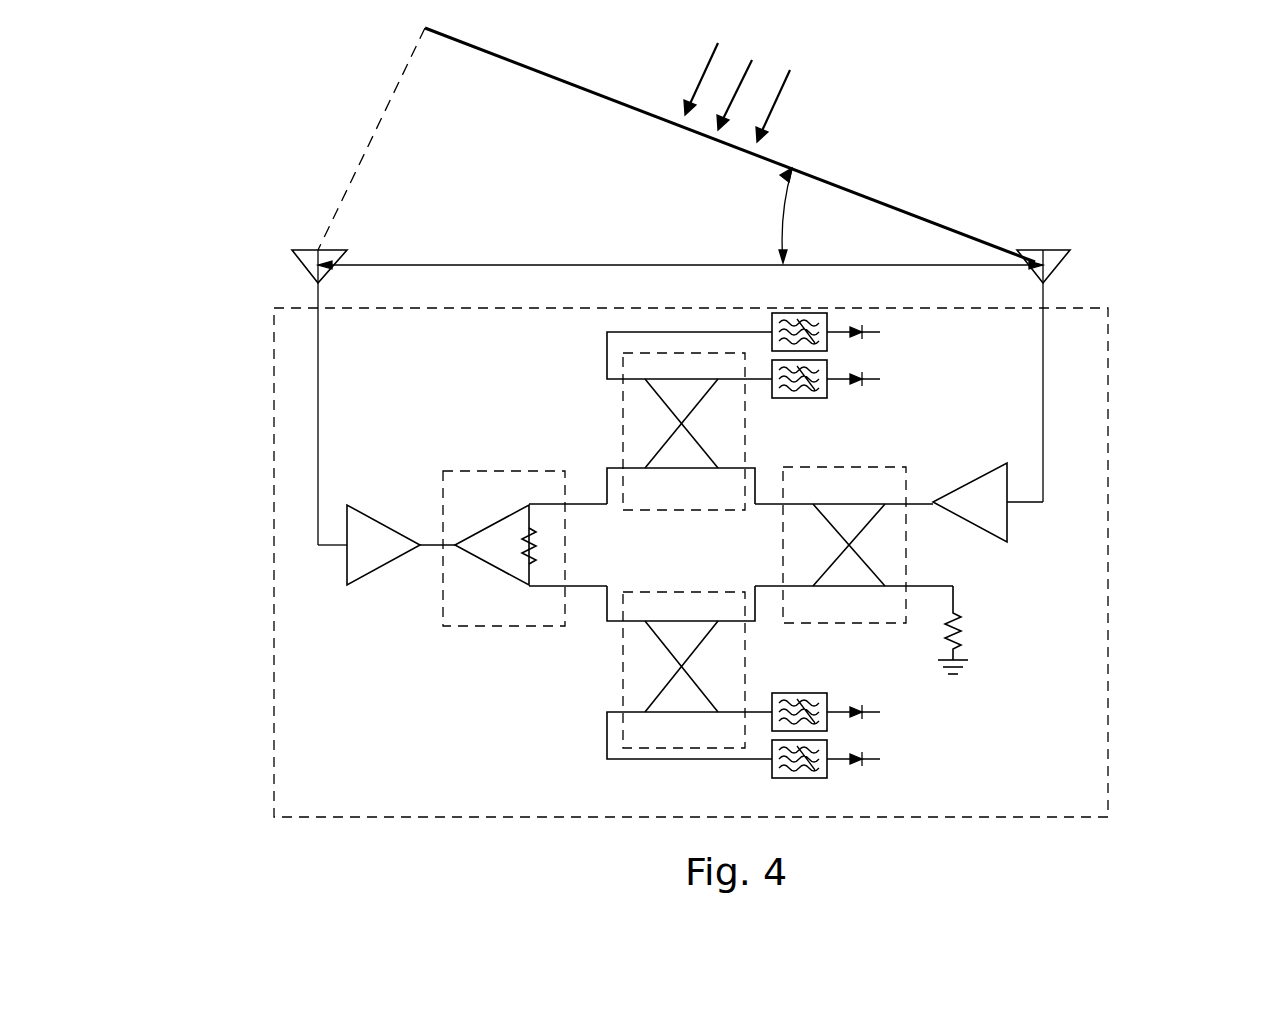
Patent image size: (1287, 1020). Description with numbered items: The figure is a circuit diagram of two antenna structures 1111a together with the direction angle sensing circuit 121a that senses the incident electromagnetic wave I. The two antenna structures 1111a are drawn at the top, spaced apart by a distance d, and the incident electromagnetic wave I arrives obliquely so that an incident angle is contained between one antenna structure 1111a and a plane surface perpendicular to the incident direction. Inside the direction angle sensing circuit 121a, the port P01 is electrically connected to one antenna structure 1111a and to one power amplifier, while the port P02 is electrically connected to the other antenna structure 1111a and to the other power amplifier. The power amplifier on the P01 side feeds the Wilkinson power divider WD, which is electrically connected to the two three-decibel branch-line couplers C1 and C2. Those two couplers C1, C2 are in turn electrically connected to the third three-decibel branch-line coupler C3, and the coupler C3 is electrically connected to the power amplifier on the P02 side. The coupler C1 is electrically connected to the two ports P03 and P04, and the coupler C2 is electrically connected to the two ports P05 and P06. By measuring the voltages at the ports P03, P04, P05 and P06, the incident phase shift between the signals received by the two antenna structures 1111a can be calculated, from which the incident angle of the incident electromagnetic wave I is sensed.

The antenna structure 1111a is at (305, 272).
The direction angle sensing circuit 121a is at (1108, 322).
The incident electromagnetic wave I is at (777, 98).
The distance d is at (680, 251).
The port P01 is at (370, 545).
The port P02 is at (999, 503).
The port P03 is at (854, 332).
The port P04 is at (854, 379).
The port P05 is at (854, 712).
The port P06 is at (854, 759).
The 3 dB branch-line coupler C1 is at (620, 406).
The 3 dB branch-line coupler C2 is at (620, 672).
The 3 dB branch-line coupler C3 is at (900, 466).
The Wilkinson power divider WD is at (438, 597).